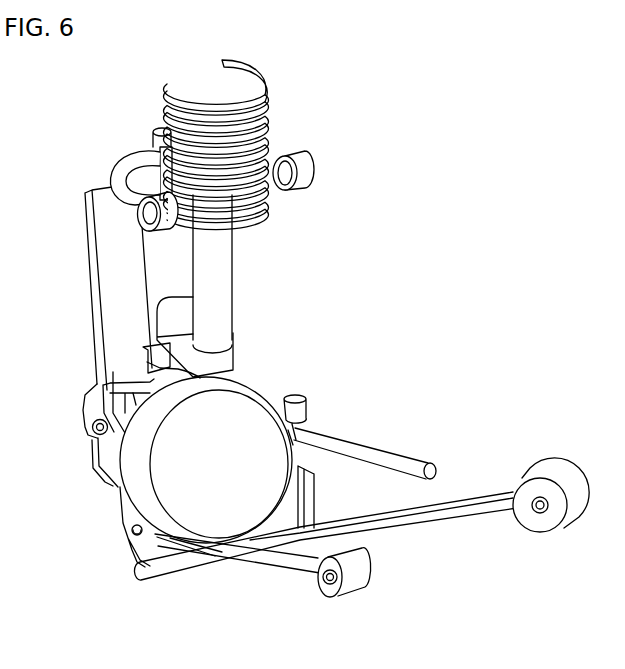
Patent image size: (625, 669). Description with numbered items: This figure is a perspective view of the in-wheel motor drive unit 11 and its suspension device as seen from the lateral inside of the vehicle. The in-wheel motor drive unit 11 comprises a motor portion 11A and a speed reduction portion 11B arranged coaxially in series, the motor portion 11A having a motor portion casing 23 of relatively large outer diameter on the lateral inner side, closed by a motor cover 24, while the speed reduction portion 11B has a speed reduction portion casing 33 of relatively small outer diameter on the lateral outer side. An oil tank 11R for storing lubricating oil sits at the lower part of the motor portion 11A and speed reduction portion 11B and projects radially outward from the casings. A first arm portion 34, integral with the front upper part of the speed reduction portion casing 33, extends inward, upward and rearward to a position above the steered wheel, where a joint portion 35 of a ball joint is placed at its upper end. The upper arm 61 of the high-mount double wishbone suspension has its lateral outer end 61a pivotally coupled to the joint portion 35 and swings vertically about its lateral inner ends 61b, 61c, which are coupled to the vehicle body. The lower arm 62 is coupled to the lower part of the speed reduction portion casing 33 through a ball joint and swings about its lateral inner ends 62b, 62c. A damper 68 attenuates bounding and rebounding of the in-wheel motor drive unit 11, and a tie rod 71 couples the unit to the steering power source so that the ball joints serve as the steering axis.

The in-wheel motor drive unit 11 is at (272, 378).
The motor portion 11A is at (134, 510).
The speed reduction portion 11B is at (106, 495).
The oil tank 11R is at (318, 503).
The motor portion casing 23 is at (240, 377).
The motor cover 24 is at (292, 398).
The speed reduction portion casing 33 is at (112, 461).
The first arm portion 34 is at (113, 290).
The joint portion 35 is at (160, 167).
The upper arm 61 is at (117, 180).
The lateral outer end 61a is at (158, 130).
The lateral inner end 61b is at (166, 226).
The lateral inner end 61c is at (308, 167).
The lower arm 62 is at (418, 515).
The lateral inner end 62b is at (345, 590).
The lateral inner end 62c is at (551, 509).
The damper 68 is at (223, 266).
The tie rod 71 is at (355, 447).